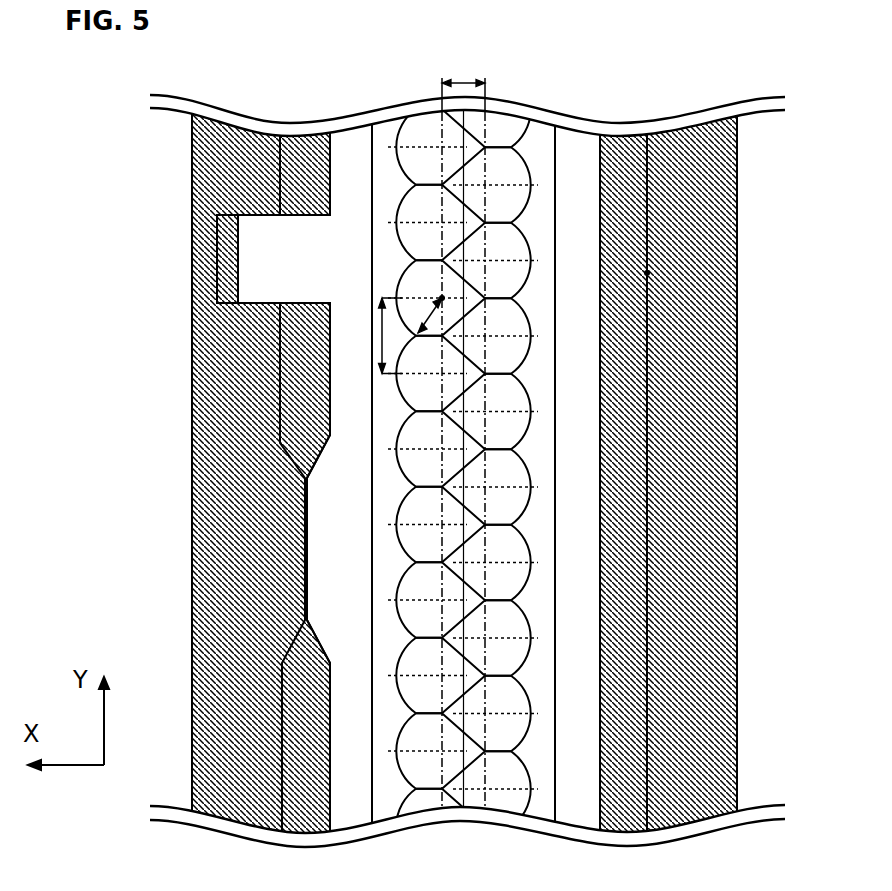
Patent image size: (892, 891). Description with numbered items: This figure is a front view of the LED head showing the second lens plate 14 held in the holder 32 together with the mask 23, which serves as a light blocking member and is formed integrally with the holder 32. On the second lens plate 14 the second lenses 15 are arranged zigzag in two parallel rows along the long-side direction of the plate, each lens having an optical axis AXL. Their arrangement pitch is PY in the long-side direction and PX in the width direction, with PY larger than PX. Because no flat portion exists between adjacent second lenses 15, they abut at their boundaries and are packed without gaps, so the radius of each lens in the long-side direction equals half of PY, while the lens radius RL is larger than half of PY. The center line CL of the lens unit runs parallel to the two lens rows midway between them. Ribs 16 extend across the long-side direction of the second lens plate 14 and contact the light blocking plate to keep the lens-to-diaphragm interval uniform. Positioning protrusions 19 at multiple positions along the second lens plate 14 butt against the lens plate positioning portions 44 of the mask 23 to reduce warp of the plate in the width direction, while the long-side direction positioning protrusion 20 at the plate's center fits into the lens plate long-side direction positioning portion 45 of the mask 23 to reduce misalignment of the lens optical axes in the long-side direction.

The second lens plate 14 is at (600, 250).
The second lenses 15 is at (513, 273).
The ribs 16 is at (577, 308).
The positioning protrusions 19 is at (320, 558).
The long-side direction positioning protrusion 20 is at (250, 270).
The mask 23 is at (192, 148).
The holder 32 is at (210, 183).
The lens plate positioning portions 44 is at (288, 537).
The lens plate long-side direction positioning portion 45 is at (216, 238).
The arrangement pitch in the width direction PX is at (463, 83).
The arrangement pitch in the long-side direction PY is at (373, 336).
The optical axis AXL is at (441, 297).
The radius of second lens RL is at (422, 315).
The center line CL is at (478, 810).